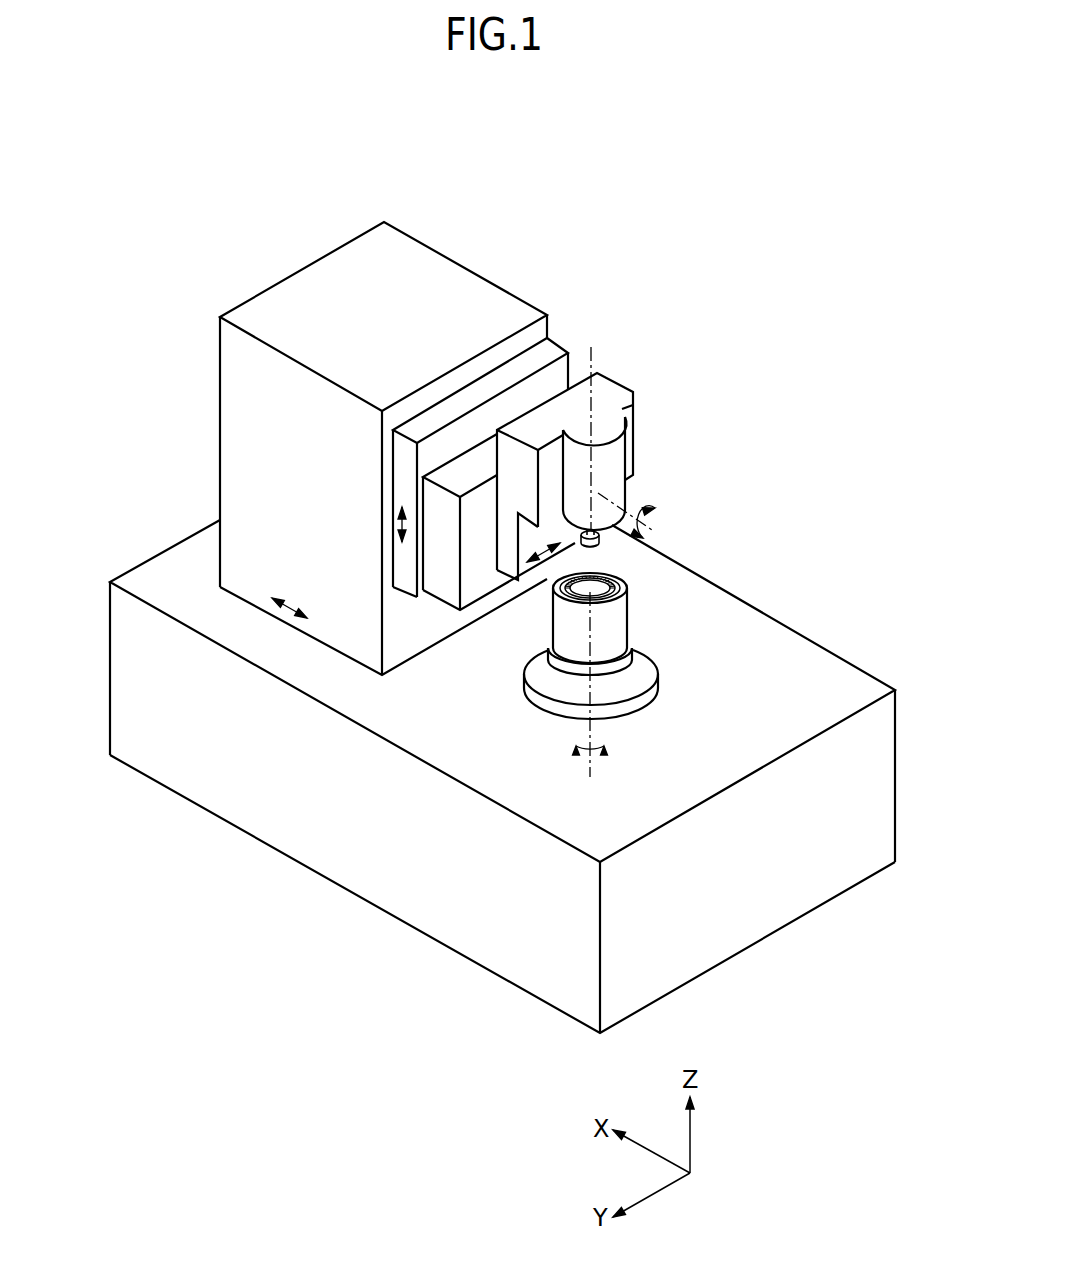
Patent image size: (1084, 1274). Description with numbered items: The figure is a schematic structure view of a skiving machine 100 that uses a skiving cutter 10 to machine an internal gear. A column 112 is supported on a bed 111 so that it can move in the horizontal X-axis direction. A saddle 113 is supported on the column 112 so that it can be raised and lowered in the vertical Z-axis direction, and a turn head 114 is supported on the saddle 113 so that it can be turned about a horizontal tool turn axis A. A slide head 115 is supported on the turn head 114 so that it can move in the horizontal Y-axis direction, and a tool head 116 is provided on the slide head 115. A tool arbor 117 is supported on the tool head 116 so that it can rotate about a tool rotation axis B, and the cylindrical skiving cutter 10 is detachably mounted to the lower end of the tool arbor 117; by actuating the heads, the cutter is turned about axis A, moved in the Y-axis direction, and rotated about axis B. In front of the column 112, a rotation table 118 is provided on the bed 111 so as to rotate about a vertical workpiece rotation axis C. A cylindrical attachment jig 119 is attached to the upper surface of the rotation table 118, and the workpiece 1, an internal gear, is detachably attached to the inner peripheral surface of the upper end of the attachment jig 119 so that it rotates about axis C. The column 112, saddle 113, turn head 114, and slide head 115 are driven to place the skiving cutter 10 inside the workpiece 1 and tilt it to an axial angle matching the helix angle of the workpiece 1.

The skiving machine 100 is at (727, 248).
The bed 111 is at (148, 577).
The column 112 is at (218, 387).
The saddle 113 is at (398, 568).
The turn head 114 is at (438, 590).
The slide head 115 is at (503, 558).
The tool head 116 is at (618, 450).
The tool arbor 117 is at (545, 565).
The workpiece 1 is at (580, 541).
The skiving cutter 10 is at (592, 543).
The rotation table 118 is at (555, 691).
The attachment jig 119 is at (617, 630).